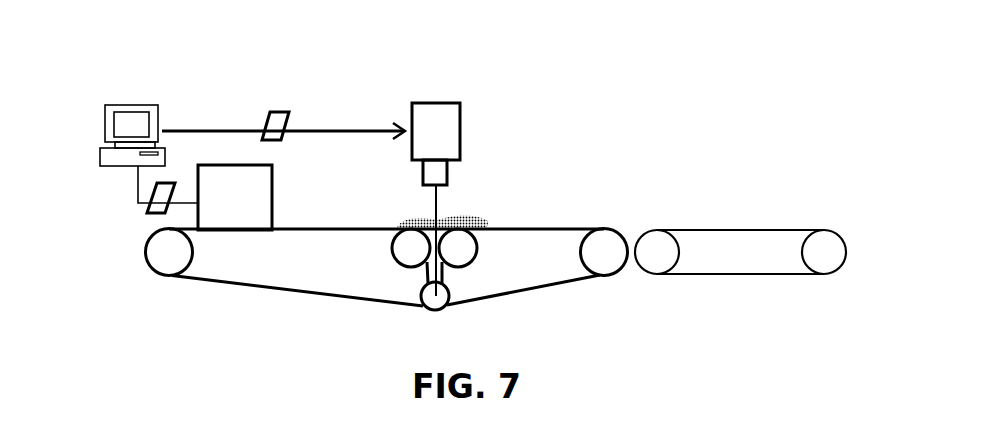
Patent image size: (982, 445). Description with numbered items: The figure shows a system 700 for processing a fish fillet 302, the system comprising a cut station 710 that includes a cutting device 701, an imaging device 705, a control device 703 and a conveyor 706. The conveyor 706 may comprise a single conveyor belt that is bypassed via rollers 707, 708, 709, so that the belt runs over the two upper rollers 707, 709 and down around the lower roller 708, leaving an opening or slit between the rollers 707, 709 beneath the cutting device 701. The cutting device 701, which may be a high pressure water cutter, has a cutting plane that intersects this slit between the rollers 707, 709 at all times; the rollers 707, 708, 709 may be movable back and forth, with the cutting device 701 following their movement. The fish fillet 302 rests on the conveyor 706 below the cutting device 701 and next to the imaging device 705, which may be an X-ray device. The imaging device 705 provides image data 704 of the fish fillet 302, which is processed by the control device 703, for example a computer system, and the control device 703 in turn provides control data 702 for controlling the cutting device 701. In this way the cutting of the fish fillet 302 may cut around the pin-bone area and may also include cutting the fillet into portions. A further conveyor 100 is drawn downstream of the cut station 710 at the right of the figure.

The system 700 is at (745, 70).
The cut station 710 is at (566, 115).
The control device 703 is at (133, 110).
The control data 702 is at (285, 112).
The cutting device 701 is at (440, 103).
The image data 704 is at (140, 215).
The imaging device 705 is at (271, 170).
The conveyor 706 is at (340, 229).
The roller 709 is at (392, 247).
The roller 707 is at (478, 247).
The roller 708 is at (440, 298).
The fish fillet 302 is at (478, 222).
The conveyor 100 is at (729, 195).